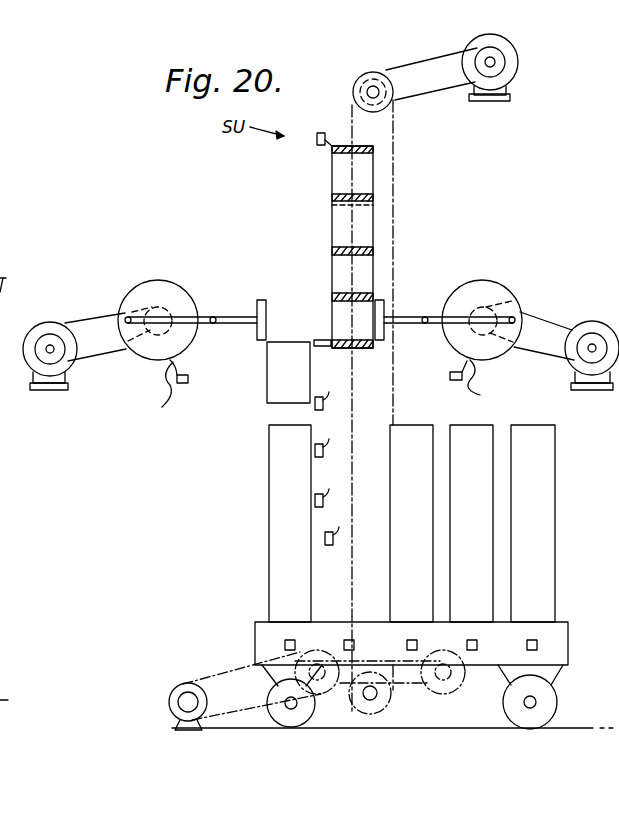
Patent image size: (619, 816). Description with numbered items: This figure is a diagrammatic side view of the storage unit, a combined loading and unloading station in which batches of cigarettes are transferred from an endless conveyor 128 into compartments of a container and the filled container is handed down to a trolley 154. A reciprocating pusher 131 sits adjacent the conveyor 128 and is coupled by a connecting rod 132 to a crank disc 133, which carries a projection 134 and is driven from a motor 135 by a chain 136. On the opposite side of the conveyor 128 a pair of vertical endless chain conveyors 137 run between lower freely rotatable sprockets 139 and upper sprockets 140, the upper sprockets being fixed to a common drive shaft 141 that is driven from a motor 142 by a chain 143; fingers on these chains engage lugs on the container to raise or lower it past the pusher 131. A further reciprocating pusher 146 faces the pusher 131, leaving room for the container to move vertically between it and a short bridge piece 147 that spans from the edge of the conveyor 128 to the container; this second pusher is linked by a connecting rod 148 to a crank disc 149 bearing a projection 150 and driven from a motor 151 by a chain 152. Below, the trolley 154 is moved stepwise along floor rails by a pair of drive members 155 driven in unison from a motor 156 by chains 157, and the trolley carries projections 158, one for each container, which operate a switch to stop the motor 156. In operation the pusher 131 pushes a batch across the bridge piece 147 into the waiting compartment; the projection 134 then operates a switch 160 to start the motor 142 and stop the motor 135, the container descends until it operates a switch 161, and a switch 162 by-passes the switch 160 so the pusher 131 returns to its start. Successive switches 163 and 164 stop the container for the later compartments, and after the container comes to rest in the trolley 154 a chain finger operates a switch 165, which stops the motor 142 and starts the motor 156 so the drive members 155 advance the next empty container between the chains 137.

The endless conveyor 128 is at (280, 378).
The reciprocating pusher 131 is at (270, 298).
The connecting rod 132 is at (184, 317).
The crank disc 133 is at (143, 283).
The projection 134 is at (164, 402).
The motor 135 is at (67, 367).
The chain 136 is at (88, 318).
The vertical endless chain conveyors 137 is at (397, 177).
The lower sprockets 139 is at (362, 714).
The upper sprockets 140 is at (354, 96).
The drive shaft 141 is at (369, 86).
The motor 142 is at (519, 57).
The chain 143 is at (413, 66).
The further reciprocating pusher 146 is at (386, 306).
The bridge piece 147 is at (322, 338).
The connecting rod 148 is at (436, 325).
The crank disc 149 is at (485, 288).
The projection 150 is at (489, 384).
The motor 151 is at (615, 322).
The chain 152 is at (562, 297).
The trolley 154 is at (258, 630).
The drive members 155 is at (336, 676).
The motor 156 is at (178, 683).
The chains 157 is at (228, 690).
The projections 158 is at (470, 640).
The switch 160 is at (188, 377).
The switch 161 is at (315, 408).
The switch 162 is at (317, 142).
The switch 163 is at (313, 452).
The switch 164 is at (313, 500).
The switch 165 is at (325, 540).